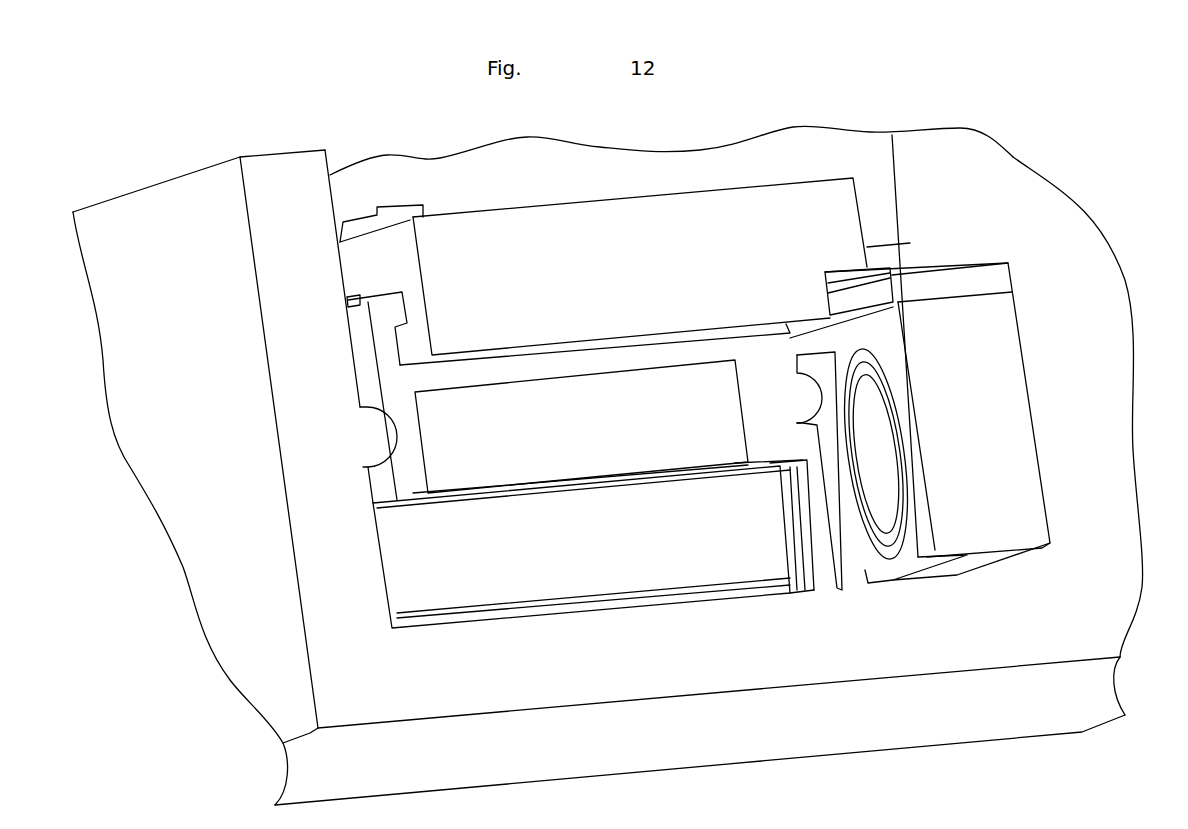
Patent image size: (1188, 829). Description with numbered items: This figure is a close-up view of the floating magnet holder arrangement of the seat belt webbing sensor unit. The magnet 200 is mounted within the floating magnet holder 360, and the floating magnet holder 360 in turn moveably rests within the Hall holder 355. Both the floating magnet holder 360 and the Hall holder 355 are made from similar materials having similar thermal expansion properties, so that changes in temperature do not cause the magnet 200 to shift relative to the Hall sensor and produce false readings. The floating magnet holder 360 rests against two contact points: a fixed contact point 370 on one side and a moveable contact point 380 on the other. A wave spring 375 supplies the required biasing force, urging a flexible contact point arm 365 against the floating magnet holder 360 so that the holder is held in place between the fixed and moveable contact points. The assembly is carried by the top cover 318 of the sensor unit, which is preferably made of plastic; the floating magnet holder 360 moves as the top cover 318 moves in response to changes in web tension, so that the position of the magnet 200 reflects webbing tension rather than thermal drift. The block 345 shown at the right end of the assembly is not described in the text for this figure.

The top cover 318 is at (148, 212).
The Hall holder 355 is at (540, 243).
The floating magnet holder 360 is at (760, 360).
The magnet 200 is at (640, 467).
The fixed contact point 370 is at (383, 433).
The flexible contact point arm 365 is at (842, 502).
The moveable contact point 380 is at (797, 398).
The wave spring 375 is at (863, 357).
The end block 345 is at (1022, 470).